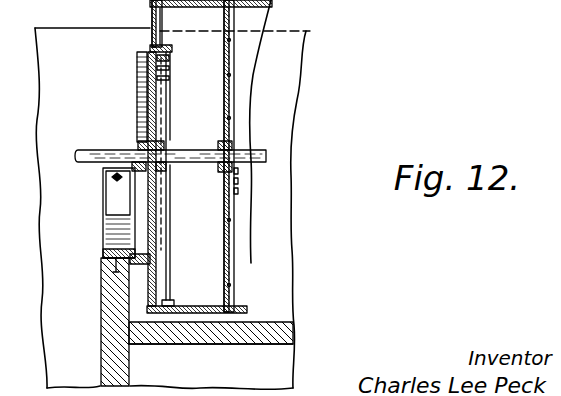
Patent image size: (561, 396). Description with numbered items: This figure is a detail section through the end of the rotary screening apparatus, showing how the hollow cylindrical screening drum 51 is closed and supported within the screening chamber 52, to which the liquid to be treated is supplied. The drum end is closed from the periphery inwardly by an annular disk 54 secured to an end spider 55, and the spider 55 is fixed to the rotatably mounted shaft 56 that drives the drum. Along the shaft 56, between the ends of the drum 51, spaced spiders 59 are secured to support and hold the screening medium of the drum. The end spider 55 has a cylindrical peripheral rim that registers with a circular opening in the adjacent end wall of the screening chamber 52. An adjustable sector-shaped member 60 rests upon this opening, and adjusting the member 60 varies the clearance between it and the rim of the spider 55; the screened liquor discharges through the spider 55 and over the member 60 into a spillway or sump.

The screening drum 51 is at (253, 257).
The screening chamber 52 is at (373, 0).
The annular disk 54 is at (150, 22).
The spider 55 is at (145, 95).
The shaft 56 is at (96, 149).
The spaced spiders 59 is at (234, 43).
The sector-shaped member 60 is at (115, 213).